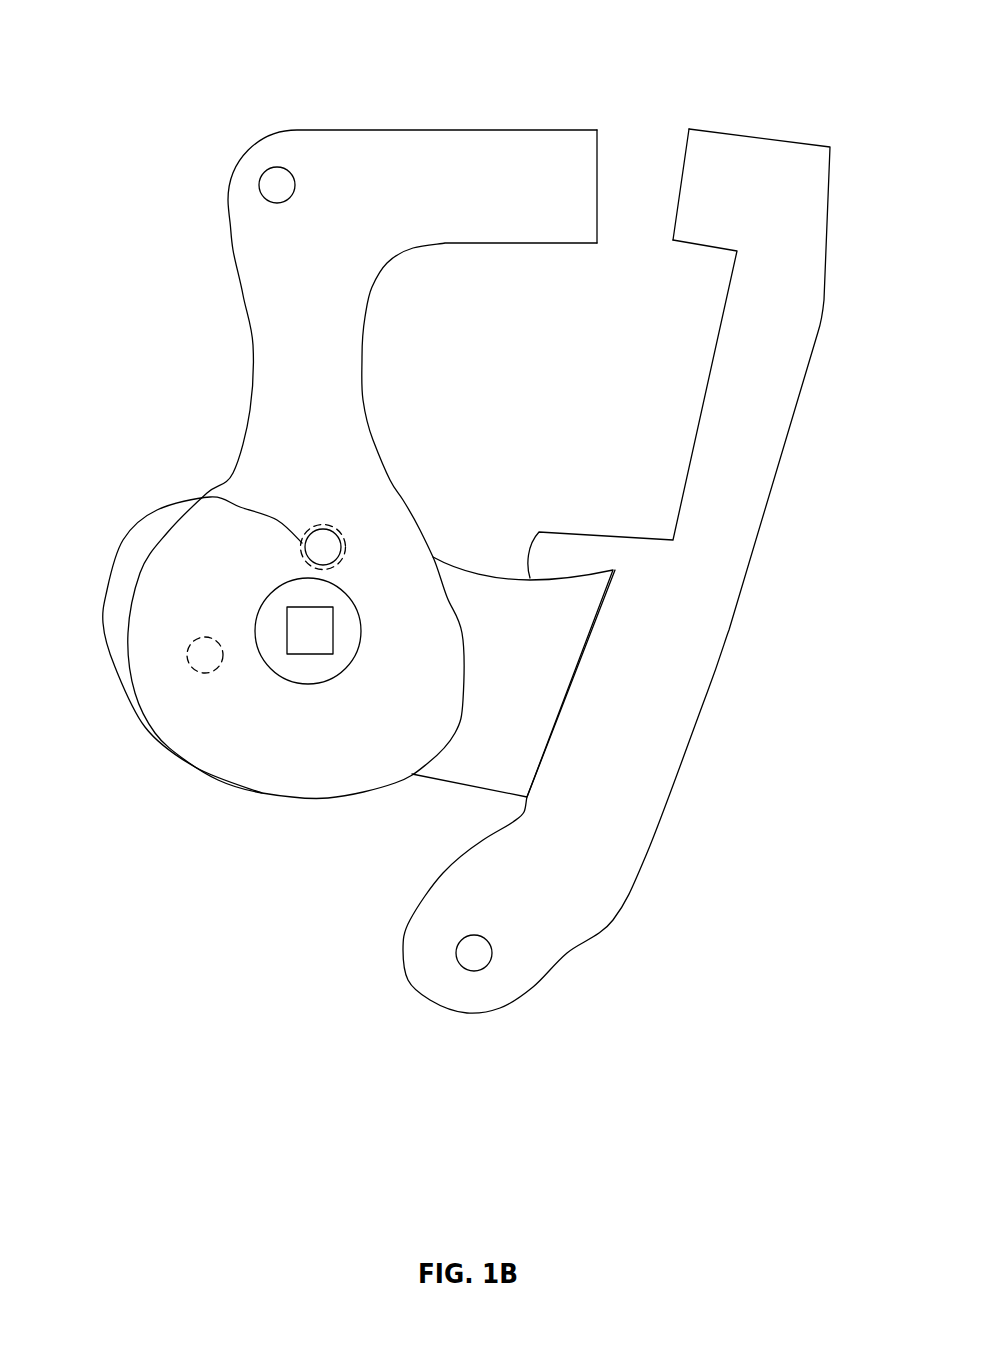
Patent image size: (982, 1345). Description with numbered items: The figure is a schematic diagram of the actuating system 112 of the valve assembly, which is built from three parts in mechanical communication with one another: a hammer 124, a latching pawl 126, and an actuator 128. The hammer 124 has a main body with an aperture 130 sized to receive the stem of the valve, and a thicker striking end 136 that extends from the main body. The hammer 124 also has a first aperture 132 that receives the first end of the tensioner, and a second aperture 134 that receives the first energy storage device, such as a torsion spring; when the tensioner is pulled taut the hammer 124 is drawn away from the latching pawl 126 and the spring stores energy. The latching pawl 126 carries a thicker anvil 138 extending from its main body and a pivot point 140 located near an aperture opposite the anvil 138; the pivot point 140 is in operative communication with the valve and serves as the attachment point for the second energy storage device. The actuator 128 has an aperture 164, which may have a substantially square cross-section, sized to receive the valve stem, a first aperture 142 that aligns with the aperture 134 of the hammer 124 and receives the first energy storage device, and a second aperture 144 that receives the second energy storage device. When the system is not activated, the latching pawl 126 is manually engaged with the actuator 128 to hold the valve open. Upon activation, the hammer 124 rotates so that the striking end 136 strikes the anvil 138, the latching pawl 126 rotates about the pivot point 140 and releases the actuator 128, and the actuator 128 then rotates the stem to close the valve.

The actuating system 112 is at (166, 76).
The hammer 124 is at (230, 222).
The latching pawl 126 is at (720, 662).
The actuator 128 is at (477, 572).
The aperture 130 is at (262, 658).
The first aperture 132 is at (295, 184).
The second aperture 134 is at (338, 528).
The striking end 136 is at (597, 164).
The anvil 138 is at (680, 203).
The pivot point 140 is at (488, 967).
The first aperture 142 is at (210, 497).
The second aperture 144 is at (187, 662).
The aperture 164 is at (295, 657).